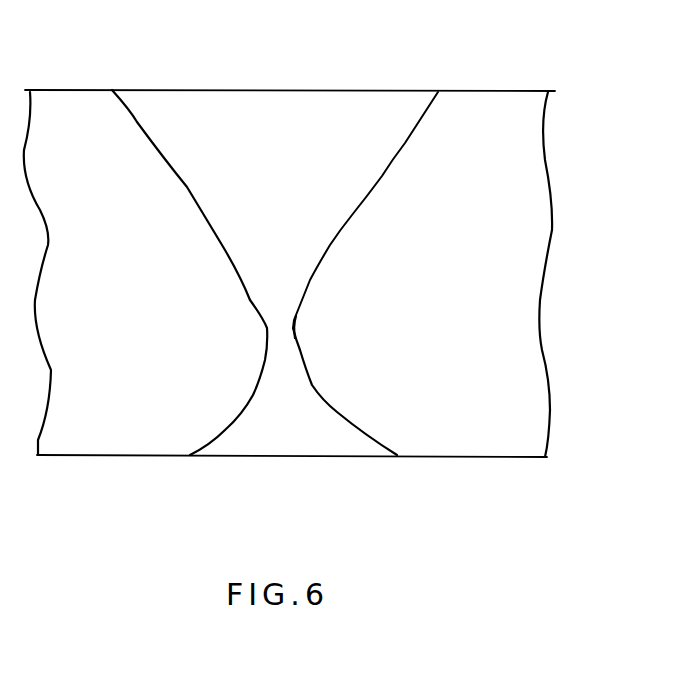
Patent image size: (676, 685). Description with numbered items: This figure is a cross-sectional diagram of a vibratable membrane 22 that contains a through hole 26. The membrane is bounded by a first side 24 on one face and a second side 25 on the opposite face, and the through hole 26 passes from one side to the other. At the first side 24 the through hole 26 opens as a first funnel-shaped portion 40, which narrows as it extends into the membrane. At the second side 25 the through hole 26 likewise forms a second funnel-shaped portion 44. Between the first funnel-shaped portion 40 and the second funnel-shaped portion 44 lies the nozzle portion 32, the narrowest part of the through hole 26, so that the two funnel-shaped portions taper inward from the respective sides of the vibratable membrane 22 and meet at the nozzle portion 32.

The vibratable membrane 22 is at (64, 88).
The first side 24 is at (497, 90).
The second side 25 is at (448, 455).
The through hole 26 is at (249, 74).
The nozzle portion 32 is at (295, 320).
The first funnel-shaped portion 40 is at (382, 176).
The second funnel-shaped portion 44 is at (337, 412).